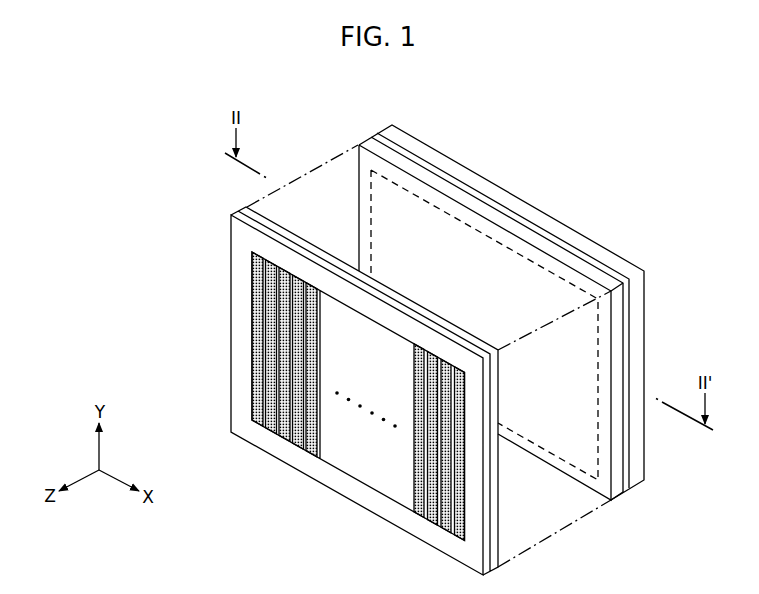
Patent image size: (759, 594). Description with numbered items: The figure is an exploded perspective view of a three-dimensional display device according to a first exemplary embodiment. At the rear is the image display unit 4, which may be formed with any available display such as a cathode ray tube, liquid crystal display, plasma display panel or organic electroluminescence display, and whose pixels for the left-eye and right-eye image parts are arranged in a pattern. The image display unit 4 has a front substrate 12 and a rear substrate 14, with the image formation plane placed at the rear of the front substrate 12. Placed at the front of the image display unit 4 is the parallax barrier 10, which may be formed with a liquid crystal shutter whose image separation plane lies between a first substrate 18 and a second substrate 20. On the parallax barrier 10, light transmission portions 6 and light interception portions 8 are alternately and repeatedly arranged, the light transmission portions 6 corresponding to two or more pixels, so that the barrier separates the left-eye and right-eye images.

The image display unit 4 is at (540, 203).
The light transmission portions 6 is at (418, 493).
The light interception portions 8 is at (430, 497).
The parallax barrier 10 is at (332, 377).
The front substrate 12 is at (615, 492).
The rear substrate 14 is at (641, 358).
The first substrate 18 is at (246, 208).
The second substrate 20 is at (242, 236).